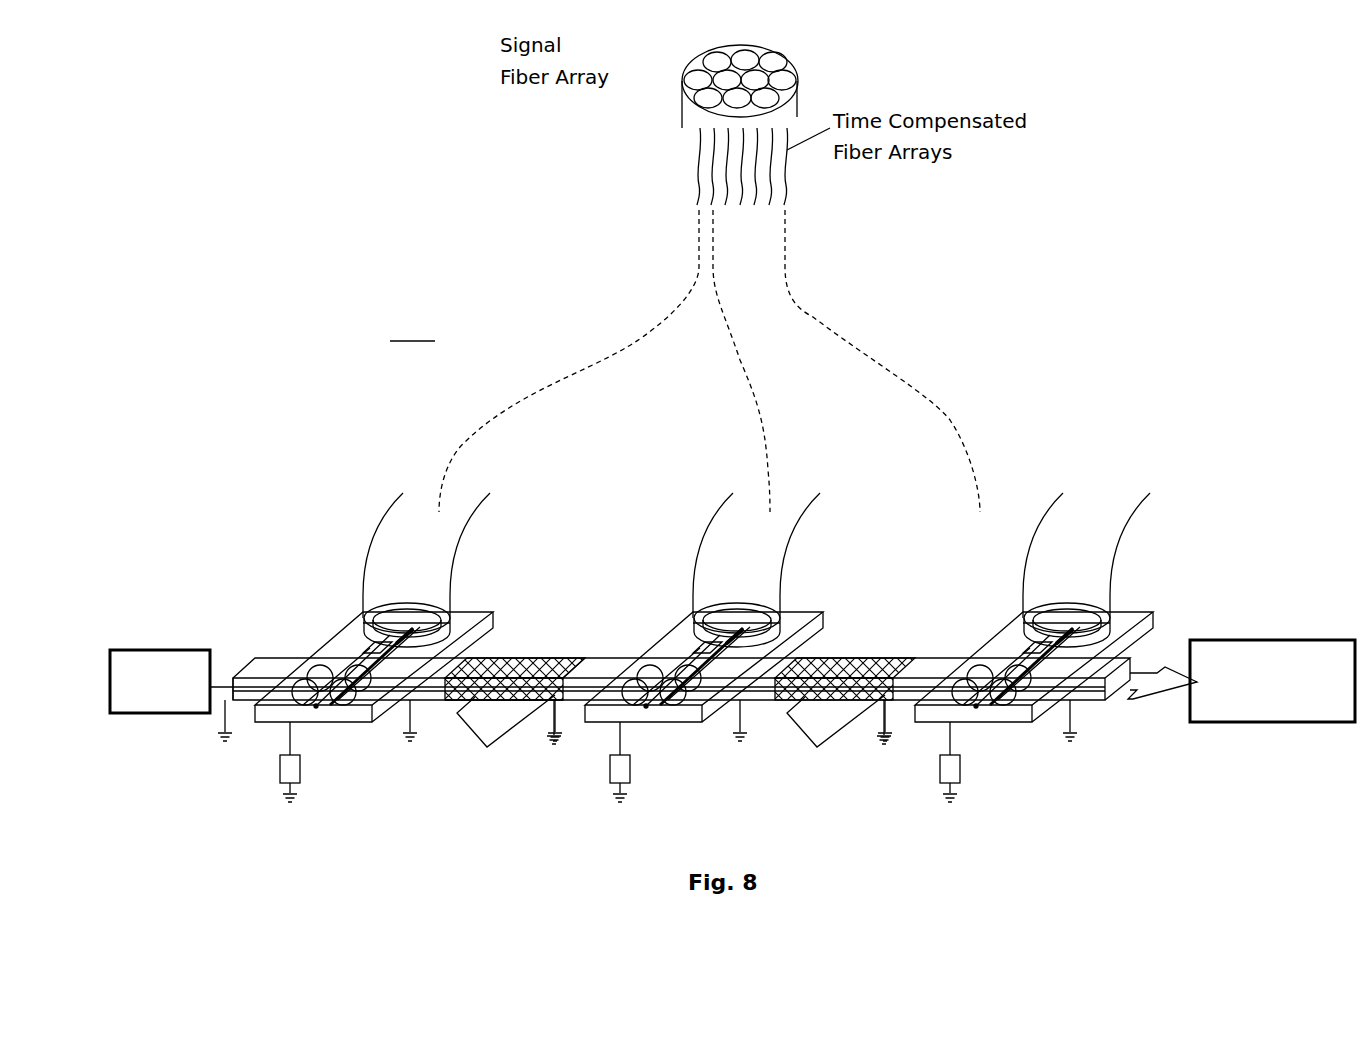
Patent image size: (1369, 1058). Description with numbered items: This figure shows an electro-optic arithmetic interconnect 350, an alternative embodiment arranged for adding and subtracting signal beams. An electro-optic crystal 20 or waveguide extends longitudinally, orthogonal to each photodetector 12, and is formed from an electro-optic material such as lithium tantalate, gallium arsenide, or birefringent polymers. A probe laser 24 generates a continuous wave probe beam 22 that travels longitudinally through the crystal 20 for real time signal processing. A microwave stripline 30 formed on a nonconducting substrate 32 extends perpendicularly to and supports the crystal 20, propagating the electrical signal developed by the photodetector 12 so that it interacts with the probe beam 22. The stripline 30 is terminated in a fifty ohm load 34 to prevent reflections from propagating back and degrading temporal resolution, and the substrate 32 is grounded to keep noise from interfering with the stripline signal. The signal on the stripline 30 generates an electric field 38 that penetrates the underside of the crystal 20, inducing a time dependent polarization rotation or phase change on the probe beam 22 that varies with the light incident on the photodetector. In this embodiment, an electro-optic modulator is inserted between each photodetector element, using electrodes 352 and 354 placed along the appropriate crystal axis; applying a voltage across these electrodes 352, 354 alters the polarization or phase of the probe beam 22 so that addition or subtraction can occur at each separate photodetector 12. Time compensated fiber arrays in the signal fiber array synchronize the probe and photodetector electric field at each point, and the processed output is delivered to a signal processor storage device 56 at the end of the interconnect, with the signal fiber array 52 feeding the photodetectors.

The photodetector 12 is at (360, 647).
The electro-optic crystal 20 is at (265, 663).
The optical probe beam 22 is at (231, 680).
The probe laser 24 is at (190, 705).
The microwave stripline 30 is at (363, 663).
The nonconducting substrate 32 is at (362, 718).
The 50 ohm load 34 is at (277, 770).
The electric field 38 is at (317, 675).
The signal fiber array 52 is at (690, 78).
The signal processor storage device 56 is at (1300, 652).
The electro-optic arithmetic interconnect 350 is at (732, 566).
The electrode 352 is at (562, 670).
The electrode 354 is at (548, 700).